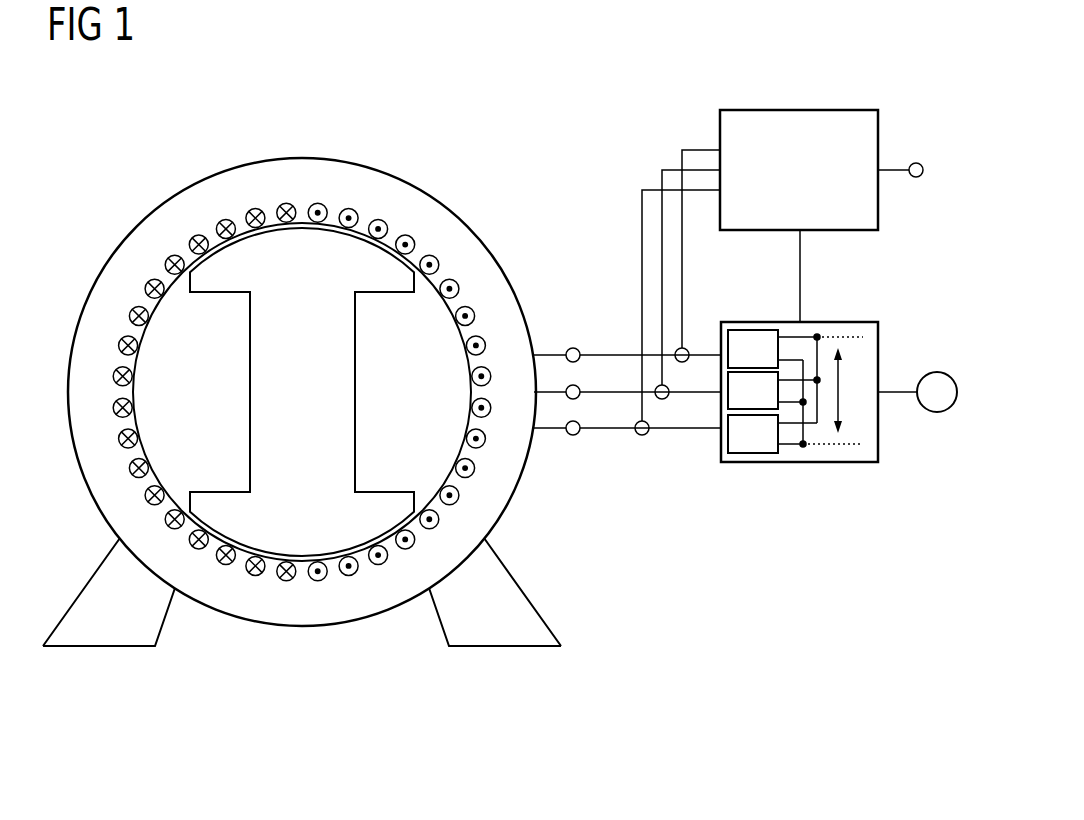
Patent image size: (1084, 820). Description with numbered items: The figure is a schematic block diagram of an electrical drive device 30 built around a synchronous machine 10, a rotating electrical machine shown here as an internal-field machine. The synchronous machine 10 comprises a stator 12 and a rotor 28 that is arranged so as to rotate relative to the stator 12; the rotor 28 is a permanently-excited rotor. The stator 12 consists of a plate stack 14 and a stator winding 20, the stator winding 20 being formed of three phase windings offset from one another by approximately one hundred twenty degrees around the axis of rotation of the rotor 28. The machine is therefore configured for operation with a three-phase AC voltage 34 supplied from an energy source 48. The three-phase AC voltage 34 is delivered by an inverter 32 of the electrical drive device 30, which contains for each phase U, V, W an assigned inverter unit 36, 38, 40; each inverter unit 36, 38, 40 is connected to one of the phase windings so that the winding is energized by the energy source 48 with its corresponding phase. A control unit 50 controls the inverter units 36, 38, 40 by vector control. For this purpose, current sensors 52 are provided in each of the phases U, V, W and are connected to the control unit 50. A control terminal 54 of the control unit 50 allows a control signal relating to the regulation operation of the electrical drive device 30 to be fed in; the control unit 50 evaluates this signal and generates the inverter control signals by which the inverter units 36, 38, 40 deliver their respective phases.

The synchronous machine 10 is at (312, 75).
The stator 12 is at (100, 272).
The plate stack 14 is at (222, 187).
The stator winding 20 is at (354, 190).
The rotor 28 is at (366, 412).
The electrical drive device 30 is at (802, 68).
The inverter 32 is at (835, 322).
The three-phase AC voltage 34 is at (622, 340).
The inverter unit 36 is at (748, 330).
The inverter unit 38 is at (755, 417).
The inverter unit 40 is at (746, 462).
The energy source 48 is at (937, 372).
The control unit 50 is at (768, 110).
The current sensors 52 is at (682, 362).
The control terminal 54 is at (897, 166).